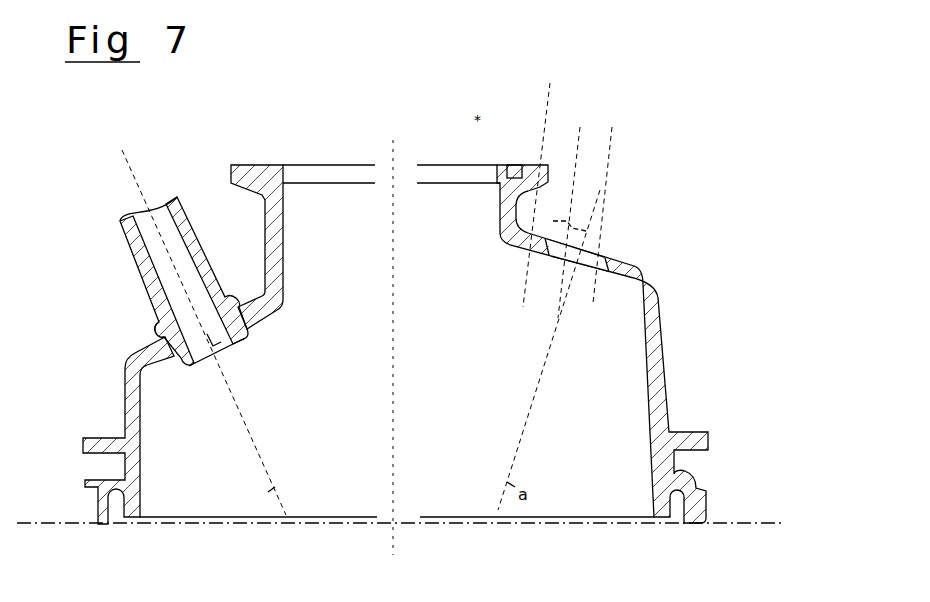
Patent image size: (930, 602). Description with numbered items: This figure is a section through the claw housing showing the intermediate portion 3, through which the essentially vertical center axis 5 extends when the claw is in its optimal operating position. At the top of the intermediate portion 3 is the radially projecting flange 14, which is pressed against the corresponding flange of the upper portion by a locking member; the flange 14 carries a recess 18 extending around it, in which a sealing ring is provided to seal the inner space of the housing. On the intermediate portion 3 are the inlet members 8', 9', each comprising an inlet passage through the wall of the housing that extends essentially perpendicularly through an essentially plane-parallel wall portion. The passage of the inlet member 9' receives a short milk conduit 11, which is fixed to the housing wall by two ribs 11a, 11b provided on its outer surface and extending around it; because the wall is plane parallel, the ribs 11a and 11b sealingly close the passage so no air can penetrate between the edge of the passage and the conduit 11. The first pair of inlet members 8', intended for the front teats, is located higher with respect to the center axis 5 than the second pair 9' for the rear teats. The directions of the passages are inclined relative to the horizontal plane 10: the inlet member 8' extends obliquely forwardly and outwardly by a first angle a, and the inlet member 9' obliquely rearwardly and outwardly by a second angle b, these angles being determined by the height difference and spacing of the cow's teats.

The intermediate portion 3 is at (650, 313).
The center axis 5 is at (393, 143).
The inlet member 8' is at (605, 222).
The inlet member 9' is at (230, 344).
The horizontal plane 10 is at (752, 512).
The short milk conduit 11 is at (128, 240).
The rib 11a is at (156, 327).
The rib 11b is at (211, 368).
The radially projecting flange 14 is at (541, 185).
The recess 18 is at (513, 160).